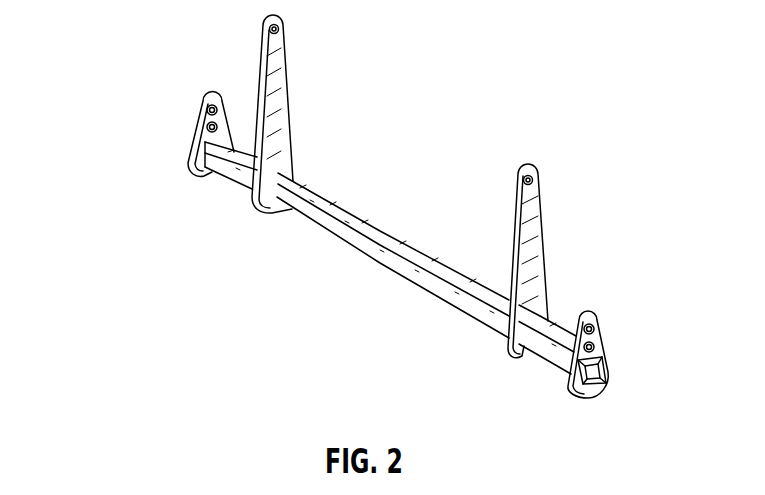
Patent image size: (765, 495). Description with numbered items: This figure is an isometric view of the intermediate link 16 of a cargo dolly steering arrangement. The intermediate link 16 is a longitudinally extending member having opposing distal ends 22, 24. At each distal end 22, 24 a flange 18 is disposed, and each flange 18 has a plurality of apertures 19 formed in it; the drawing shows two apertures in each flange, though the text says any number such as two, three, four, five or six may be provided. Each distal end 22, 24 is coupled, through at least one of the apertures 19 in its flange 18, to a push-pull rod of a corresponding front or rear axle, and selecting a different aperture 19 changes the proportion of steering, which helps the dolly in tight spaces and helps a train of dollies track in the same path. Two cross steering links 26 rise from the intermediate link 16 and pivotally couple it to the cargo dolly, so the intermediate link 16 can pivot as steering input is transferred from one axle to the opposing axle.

The intermediate link 16 is at (358, 316).
The flange 18 is at (198, 175).
The plurality of apertures 19 is at (208, 102).
The distal end 22 is at (620, 387).
The distal end 24 is at (126, 129).
The cross steering link 26 is at (291, 103).